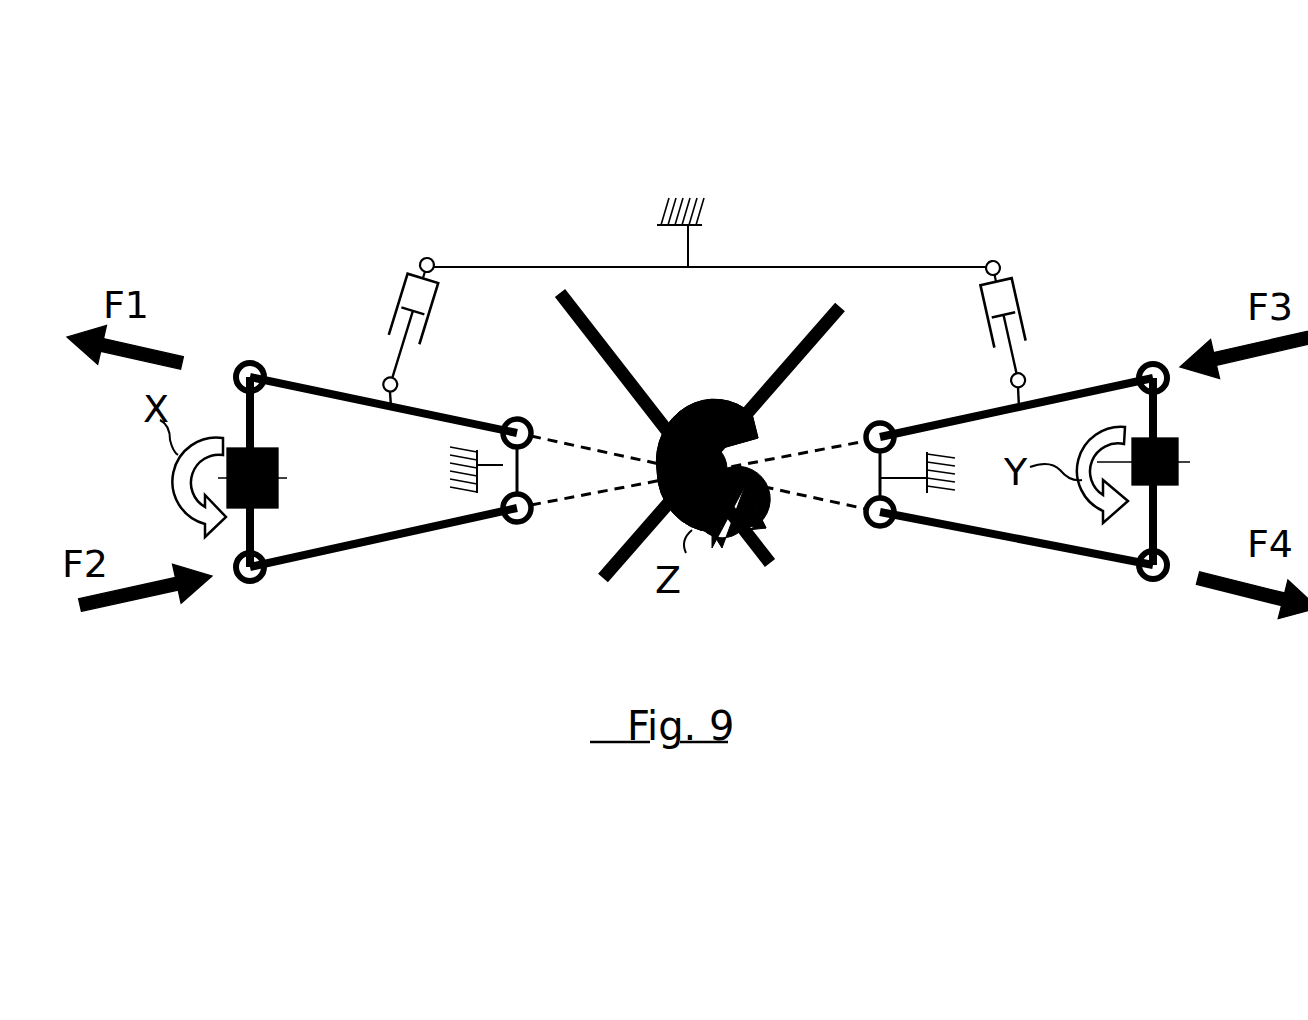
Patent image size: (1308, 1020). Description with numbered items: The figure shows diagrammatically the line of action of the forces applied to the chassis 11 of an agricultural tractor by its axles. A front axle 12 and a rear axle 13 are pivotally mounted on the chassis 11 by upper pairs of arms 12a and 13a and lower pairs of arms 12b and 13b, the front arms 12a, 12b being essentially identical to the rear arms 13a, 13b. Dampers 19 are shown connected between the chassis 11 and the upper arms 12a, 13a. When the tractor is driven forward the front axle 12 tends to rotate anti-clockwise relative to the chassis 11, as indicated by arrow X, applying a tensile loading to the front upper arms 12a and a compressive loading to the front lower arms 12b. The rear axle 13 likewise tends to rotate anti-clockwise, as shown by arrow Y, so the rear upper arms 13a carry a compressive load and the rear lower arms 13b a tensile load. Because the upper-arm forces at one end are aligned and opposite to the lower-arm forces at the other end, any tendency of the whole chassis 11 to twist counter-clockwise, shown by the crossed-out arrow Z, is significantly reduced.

The chassis 11 is at (633, 267).
The front axle 12 is at (280, 478).
The front upper arms 12a is at (335, 394).
The front lower arms 12b is at (380, 540).
The rear axle 13 is at (1180, 448).
The rear upper arms 13a is at (957, 413).
The rear lower arms 13b is at (990, 535).
The damper 19 is at (402, 293).